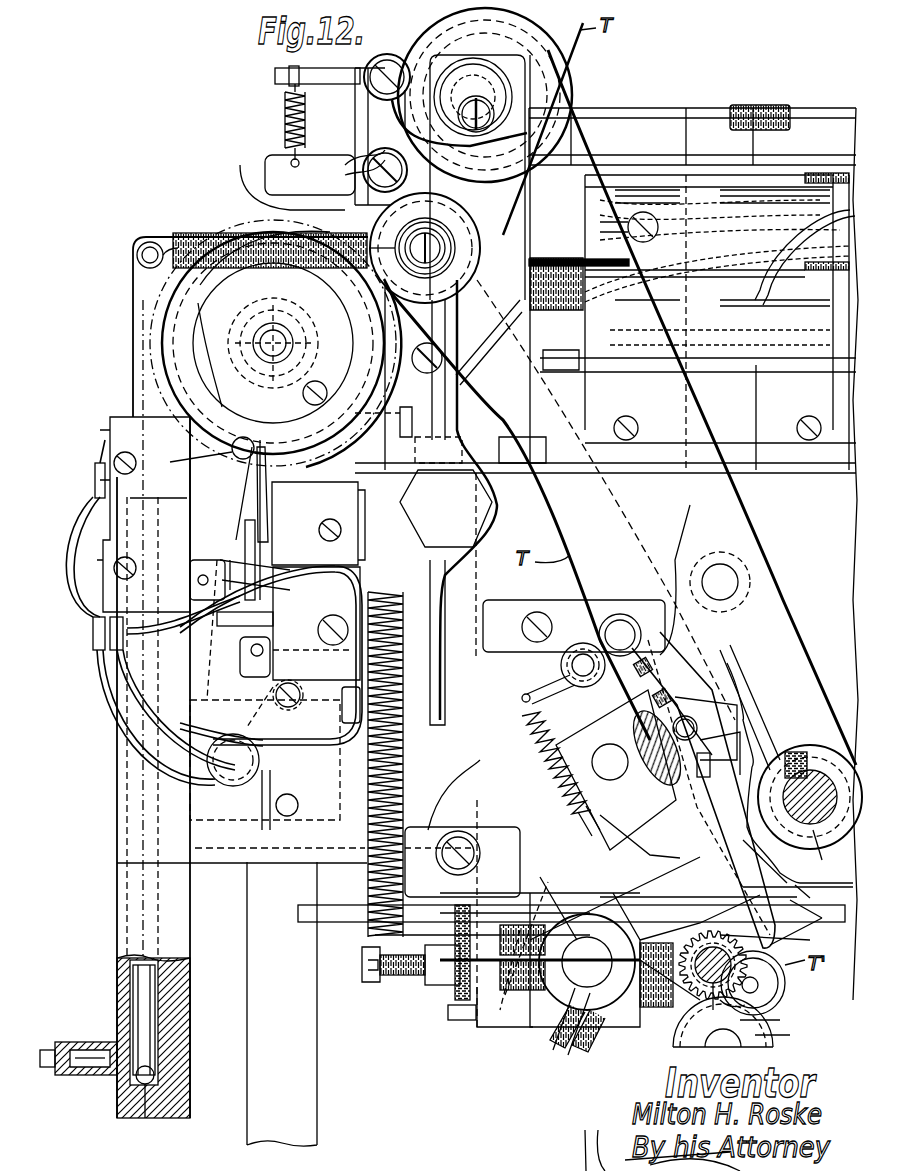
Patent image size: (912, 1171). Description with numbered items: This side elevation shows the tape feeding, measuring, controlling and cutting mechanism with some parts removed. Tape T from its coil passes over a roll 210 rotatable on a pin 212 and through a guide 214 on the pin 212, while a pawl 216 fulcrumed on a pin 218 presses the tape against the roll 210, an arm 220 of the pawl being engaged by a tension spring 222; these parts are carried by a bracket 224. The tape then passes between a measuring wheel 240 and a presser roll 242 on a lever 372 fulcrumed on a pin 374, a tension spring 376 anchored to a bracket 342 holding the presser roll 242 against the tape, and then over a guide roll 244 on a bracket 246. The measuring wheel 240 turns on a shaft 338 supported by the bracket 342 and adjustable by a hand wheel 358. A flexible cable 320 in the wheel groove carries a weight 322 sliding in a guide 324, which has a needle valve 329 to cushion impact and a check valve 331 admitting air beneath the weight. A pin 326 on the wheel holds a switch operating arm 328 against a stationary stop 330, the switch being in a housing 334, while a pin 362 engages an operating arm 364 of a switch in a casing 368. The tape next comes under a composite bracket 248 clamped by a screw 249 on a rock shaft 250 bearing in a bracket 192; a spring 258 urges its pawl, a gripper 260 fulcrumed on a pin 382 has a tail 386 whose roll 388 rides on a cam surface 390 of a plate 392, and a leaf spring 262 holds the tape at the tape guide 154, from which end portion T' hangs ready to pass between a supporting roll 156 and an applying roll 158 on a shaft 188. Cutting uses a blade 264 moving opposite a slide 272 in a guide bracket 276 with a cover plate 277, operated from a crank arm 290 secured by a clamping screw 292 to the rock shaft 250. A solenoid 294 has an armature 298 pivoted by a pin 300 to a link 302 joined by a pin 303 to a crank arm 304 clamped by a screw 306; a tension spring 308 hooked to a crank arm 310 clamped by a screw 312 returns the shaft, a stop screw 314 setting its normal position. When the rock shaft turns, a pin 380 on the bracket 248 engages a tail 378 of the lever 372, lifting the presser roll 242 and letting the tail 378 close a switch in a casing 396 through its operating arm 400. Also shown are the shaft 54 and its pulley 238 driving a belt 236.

The pin 218 is at (390, 55).
The arm 220 is at (312, 74).
The tension spring 222 is at (282, 115).
The pawl 216 is at (370, 110).
The bracket 224 is at (275, 183).
The measuring wheel 240 is at (242, 222).
The guide 214 is at (343, 168).
The roll 210 is at (370, 205).
The tension spring 376 is at (208, 240).
The bracket 342 is at (132, 282).
The hand wheel 358 is at (185, 330).
The operating arm 364 is at (255, 325).
The shaft 338 is at (281, 335).
The pin 212 is at (405, 168).
The presser roll 242 is at (452, 233).
The solenoid 294 is at (768, 188).
The flexible cable 320 is at (140, 360).
The casing 368 is at (150, 435).
The stationary stop 330 is at (268, 450).
The pin 326 is at (202, 456).
The pin 362 is at (318, 523).
The switch operating arm 328 is at (255, 540).
The guide roll 244 is at (445, 360).
The bracket 246 is at (462, 378).
The lever 372 is at (450, 408).
The pin 374 is at (492, 512).
The plate 392 is at (505, 603).
The composite bracket 248 is at (615, 615).
The armature 298 is at (760, 494).
The pin 300 is at (735, 590).
The belt 236 is at (795, 605).
The tail 378 is at (453, 599).
The pin 380 is at (560, 668).
The cam surface 390 is at (527, 690).
The tail 386 is at (660, 690).
The pulley 238 is at (810, 750).
The link 302 is at (740, 695).
The pin 382 is at (698, 725).
The gripper 260 is at (725, 752).
The roll 388 is at (618, 774).
The spring 258 is at (540, 765).
The guide bracket 276 is at (455, 828).
The operating arm 400 is at (405, 755).
The housing 334 is at (317, 680).
The cover plate 277 is at (410, 830).
The casing 396 is at (293, 845).
The slide 272 is at (342, 905).
The rock shaft 250 is at (545, 880).
The clamping screw 249 is at (520, 925).
The shaft 54 is at (818, 852).
The leaf spring 262 is at (726, 869).
The blade 264 is at (812, 915).
The tape guide 154 is at (785, 941).
The pin 303 is at (770, 995).
The applying roll 158 is at (790, 1015).
The supporting roll 156 is at (775, 1035).
The shaft 188 is at (713, 983).
The crank arm 304 is at (705, 1031).
The screw 312 is at (640, 1020).
The clamping screw 292 is at (540, 1030).
The bracket 192 is at (500, 1028).
The crank arm 290 is at (583, 1050).
The weight 322 is at (138, 972).
The needle valve 329 is at (95, 1042).
The tension spring 308 is at (368, 935).
The crank arm 310 is at (435, 985).
The stop screw 314 is at (448, 1015).
The clamping screw 306 is at (500, 1010).
The guide 324 is at (185, 1092).
The check valve 331 is at (160, 1085).